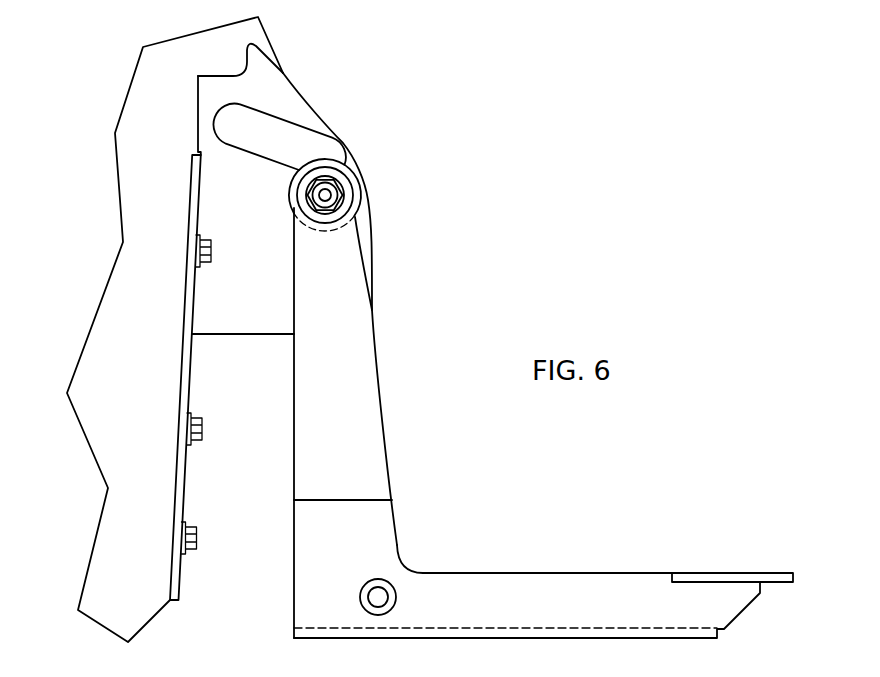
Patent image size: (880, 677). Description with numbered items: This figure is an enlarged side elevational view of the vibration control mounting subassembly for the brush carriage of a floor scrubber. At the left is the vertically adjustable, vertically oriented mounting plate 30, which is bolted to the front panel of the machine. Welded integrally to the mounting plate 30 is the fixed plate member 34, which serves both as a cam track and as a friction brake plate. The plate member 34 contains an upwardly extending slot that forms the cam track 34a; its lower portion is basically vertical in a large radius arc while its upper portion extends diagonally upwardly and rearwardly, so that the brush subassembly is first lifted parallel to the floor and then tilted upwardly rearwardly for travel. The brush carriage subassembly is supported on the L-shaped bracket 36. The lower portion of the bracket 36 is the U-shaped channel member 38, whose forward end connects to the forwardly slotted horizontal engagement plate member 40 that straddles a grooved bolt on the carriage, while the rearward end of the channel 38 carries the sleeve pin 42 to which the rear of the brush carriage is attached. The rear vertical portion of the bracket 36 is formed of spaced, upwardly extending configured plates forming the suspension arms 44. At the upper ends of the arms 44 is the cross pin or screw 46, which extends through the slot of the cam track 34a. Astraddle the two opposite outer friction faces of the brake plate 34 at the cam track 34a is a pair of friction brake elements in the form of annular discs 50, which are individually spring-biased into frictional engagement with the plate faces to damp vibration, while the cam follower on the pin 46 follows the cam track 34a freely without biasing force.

The mounting plate 30 is at (186, 457).
The fixed plate member 34 is at (240, 274).
The cam track 34a is at (238, 142).
The L-shaped bracket 36 is at (398, 537).
The U-shaped channel member 38 is at (487, 580).
The horizontal engagement plate member 40 is at (722, 577).
The sleeve pin 42 is at (378, 595).
The suspension arms 44 is at (370, 423).
The cross pin or screw 46 is at (330, 197).
The friction brake elements 50 is at (357, 176).